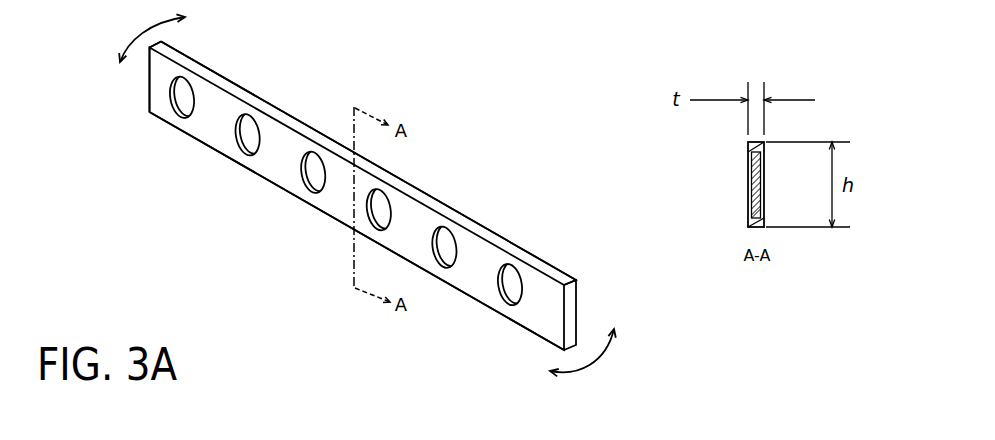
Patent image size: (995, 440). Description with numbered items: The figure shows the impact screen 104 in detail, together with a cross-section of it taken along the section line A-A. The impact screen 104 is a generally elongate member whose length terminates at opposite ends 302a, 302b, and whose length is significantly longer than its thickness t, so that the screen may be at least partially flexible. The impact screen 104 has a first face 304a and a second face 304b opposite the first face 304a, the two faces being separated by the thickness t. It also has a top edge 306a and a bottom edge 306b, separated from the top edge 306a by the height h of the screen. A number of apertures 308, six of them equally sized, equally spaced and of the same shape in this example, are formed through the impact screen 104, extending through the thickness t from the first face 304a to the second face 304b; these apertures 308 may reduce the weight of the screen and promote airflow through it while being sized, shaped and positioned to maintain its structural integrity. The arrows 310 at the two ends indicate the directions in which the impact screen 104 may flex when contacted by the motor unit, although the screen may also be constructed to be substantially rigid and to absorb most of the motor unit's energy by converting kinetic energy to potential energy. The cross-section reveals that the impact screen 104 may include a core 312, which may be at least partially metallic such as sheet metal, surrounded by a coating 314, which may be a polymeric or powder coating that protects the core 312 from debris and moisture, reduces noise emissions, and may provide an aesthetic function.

The impact screen 104 is at (499, 93).
The end 302a is at (147, 92).
The end 302b is at (573, 315).
The first face 304a is at (217, 143).
The second face 304b is at (453, 201).
The top edge 306a is at (263, 101).
The bottom edge 306b is at (469, 300).
The apertures 308 is at (307, 185).
The arrows 310 is at (133, 33).
The core 312 is at (755, 174).
The coating 314 is at (753, 205).